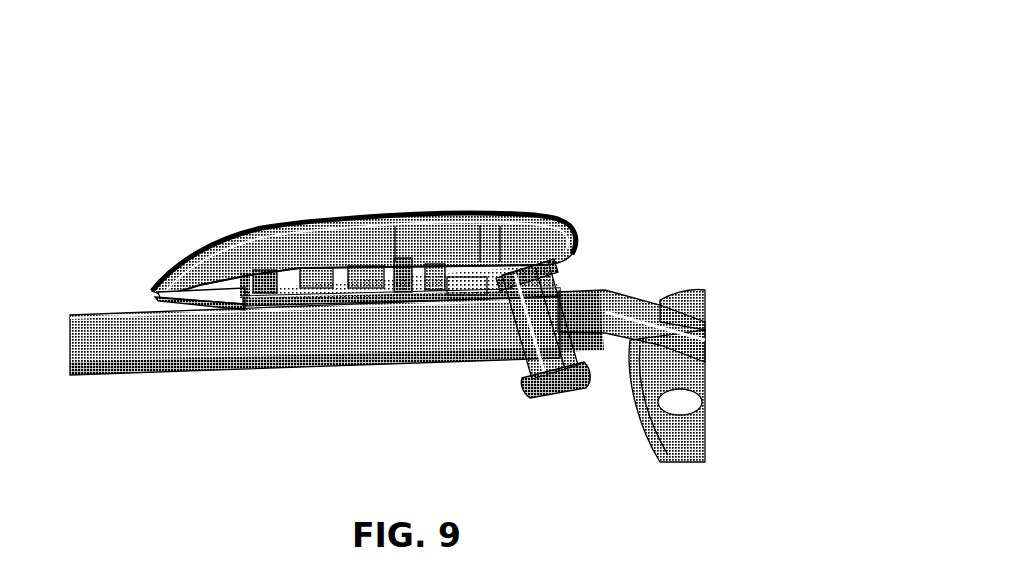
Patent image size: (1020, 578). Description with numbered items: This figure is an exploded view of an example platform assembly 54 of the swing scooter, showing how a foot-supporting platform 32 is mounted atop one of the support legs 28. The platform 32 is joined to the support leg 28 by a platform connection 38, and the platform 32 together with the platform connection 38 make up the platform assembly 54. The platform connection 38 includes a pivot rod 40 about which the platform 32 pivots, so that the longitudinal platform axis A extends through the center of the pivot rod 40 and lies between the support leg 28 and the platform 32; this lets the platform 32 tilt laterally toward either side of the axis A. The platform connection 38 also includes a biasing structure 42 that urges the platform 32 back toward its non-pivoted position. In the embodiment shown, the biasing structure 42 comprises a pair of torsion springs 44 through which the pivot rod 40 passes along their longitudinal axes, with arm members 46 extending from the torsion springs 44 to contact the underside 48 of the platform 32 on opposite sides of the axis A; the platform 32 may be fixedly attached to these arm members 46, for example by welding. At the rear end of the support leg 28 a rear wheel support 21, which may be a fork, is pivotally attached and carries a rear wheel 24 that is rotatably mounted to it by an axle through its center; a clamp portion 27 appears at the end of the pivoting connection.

The platform assembly 54 is at (276, 177).
The support leg 28 is at (114, 326).
The torsion springs 44 is at (280, 268).
The platform 32 is at (364, 216).
The arm members 46 is at (401, 262).
The longitudinal platform axis A is at (536, 282).
The rear wheel support 21 is at (589, 300).
The rear wheel 24 is at (696, 298).
The platform connection 38 is at (210, 317).
The pivot rod 40 is at (241, 304).
The biasing structure 42 is at (330, 306).
The underside 48 is at (449, 264).
The clamp cap 27 is at (558, 346).